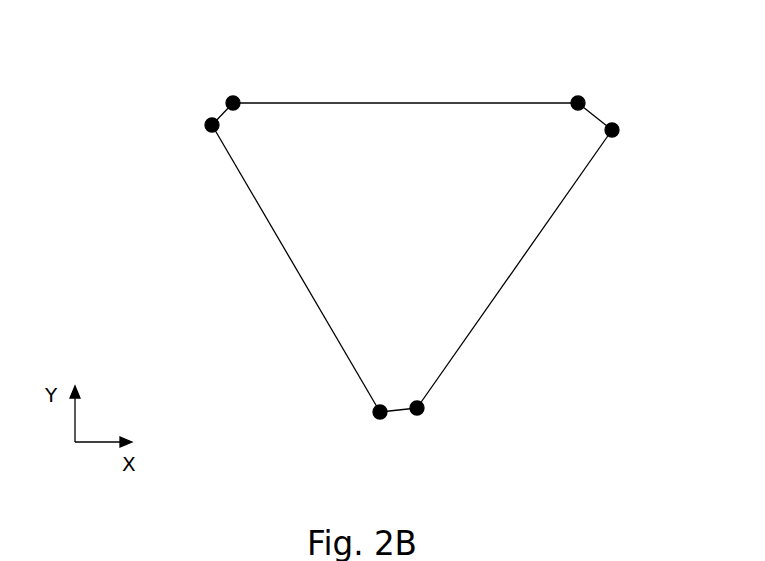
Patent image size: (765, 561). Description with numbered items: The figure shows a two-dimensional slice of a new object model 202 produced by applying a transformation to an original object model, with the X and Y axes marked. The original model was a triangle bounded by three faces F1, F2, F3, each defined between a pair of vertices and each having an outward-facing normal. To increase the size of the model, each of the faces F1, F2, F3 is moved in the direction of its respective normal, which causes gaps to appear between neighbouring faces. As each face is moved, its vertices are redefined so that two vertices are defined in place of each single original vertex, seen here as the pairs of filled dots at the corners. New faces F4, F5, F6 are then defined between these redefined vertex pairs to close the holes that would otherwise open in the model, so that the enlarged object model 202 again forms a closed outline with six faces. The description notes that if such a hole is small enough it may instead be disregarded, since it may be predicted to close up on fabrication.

The new object model 202 is at (406, 242).
The face F1 is at (427, 103).
The face F2 is at (540, 245).
The face F3 is at (273, 235).
The new face F4 is at (588, 107).
The new face F5 is at (402, 417).
The new face F6 is at (218, 110).